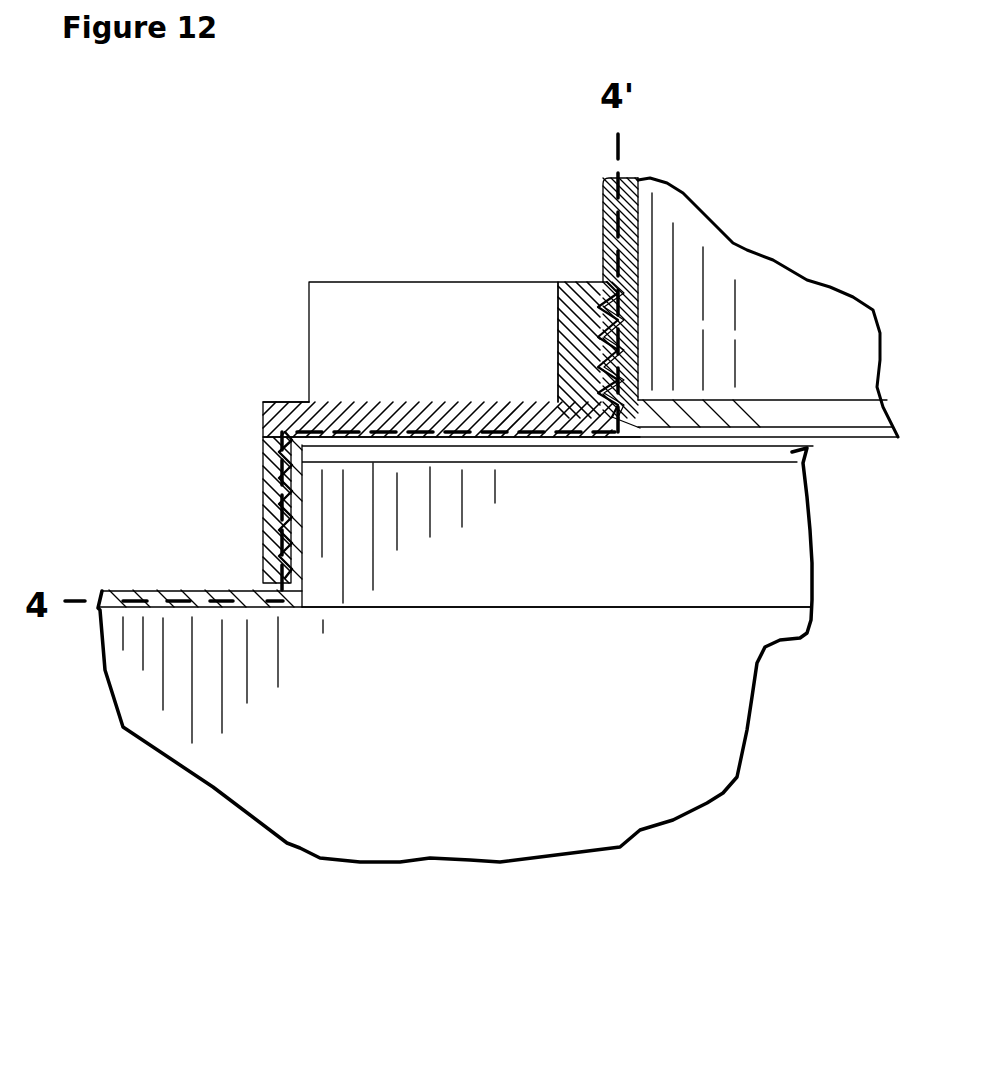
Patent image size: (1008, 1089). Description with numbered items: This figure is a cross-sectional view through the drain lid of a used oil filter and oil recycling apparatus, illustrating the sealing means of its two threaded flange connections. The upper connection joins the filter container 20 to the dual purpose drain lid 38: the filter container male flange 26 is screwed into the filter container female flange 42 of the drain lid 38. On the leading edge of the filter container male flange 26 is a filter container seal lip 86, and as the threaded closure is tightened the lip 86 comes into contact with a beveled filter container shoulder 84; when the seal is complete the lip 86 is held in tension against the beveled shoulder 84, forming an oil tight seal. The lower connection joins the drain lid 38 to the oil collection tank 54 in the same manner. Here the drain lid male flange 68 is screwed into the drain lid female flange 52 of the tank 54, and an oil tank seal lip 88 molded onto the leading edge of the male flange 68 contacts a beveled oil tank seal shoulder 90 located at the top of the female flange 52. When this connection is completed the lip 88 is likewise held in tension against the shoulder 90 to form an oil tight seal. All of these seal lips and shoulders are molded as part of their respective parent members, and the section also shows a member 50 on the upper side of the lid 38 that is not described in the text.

The filter container 20 is at (600, 207).
The filter container male flange 26 is at (640, 347).
The drain lid 38 is at (250, 337).
The filter container female flange 42 is at (552, 350).
The cap 50 is at (373, 320).
The drain lid female flange 52 is at (260, 497).
The oil collection tank 54 is at (178, 778).
The drain lid male flange 68 is at (307, 527).
The filter container shoulder 84 is at (623, 425).
The filter container seal lip 86 is at (717, 410).
The oil tank seal lip 88 is at (327, 457).
The oil tank seal shoulder 90 is at (293, 440).